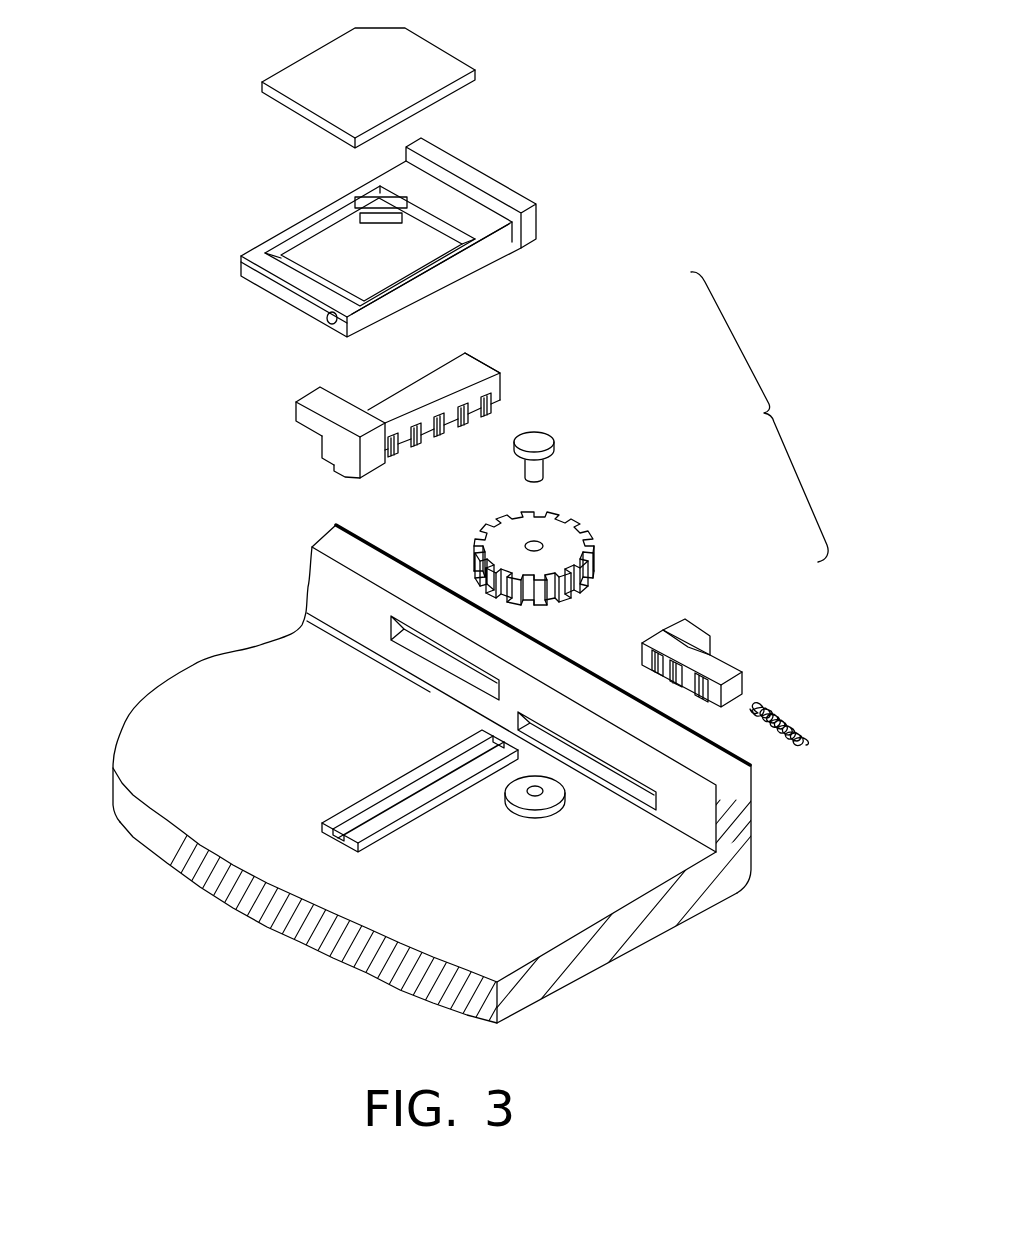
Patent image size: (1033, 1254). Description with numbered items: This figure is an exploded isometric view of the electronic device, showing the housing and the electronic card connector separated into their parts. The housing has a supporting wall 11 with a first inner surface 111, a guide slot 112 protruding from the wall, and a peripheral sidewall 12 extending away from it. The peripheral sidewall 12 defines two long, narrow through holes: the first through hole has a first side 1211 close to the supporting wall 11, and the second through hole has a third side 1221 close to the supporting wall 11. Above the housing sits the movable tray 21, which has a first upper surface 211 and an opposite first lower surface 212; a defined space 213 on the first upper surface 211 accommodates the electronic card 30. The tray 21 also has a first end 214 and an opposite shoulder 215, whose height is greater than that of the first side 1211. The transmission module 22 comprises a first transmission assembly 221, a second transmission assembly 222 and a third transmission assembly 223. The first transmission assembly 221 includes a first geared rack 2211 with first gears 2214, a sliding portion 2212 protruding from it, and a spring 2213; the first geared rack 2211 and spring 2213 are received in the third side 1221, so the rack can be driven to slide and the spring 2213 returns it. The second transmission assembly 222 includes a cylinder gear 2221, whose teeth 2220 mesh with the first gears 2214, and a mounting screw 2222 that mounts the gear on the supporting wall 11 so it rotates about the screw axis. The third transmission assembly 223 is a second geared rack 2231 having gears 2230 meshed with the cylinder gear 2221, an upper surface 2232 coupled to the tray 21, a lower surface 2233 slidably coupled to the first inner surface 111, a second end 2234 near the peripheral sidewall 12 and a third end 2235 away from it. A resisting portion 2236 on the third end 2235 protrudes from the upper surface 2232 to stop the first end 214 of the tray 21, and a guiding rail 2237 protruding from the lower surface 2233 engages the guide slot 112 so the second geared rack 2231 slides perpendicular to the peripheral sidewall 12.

The electronic card 30 is at (418, 72).
The movable tray 21 is at (384, 226).
The first upper surface 211 is at (478, 217).
The first lower surface 212 is at (462, 267).
The defined space 213 is at (327, 228).
The first end 214 is at (292, 292).
The shoulder 215 is at (458, 167).
The transmission module 22 is at (759, 417).
The first transmission assembly 221 is at (732, 644).
The first geared rack 2211 is at (707, 675).
The sliding portion 2212 is at (692, 632).
The spring 2213 is at (780, 703).
The first gears 2214 is at (653, 660).
The second transmission assembly 222 is at (607, 496).
The gear teeth 2220 is at (593, 567).
The cylinder gear 2221 is at (599, 525).
The mounting screw 2222 is at (535, 438).
The third transmission assembly 223 is at (438, 409).
The gears 2230 is at (441, 463).
The second geared rack 2231 is at (418, 483).
The upper surface 2232 is at (440, 382).
The lower surface 2233 is at (370, 470).
The second end 2234 is at (503, 375).
The third end 2235 is at (343, 453).
The resisting portion 2236 is at (312, 400).
The guiding rail 2237 is at (347, 468).
The supporting wall 11 is at (536, 812).
The first inner surface 111 is at (537, 800).
The guide slot 112 is at (343, 816).
The peripheral sidewall 12 is at (514, 765).
The first side 1211 is at (413, 638).
The third side 1221 is at (639, 790).